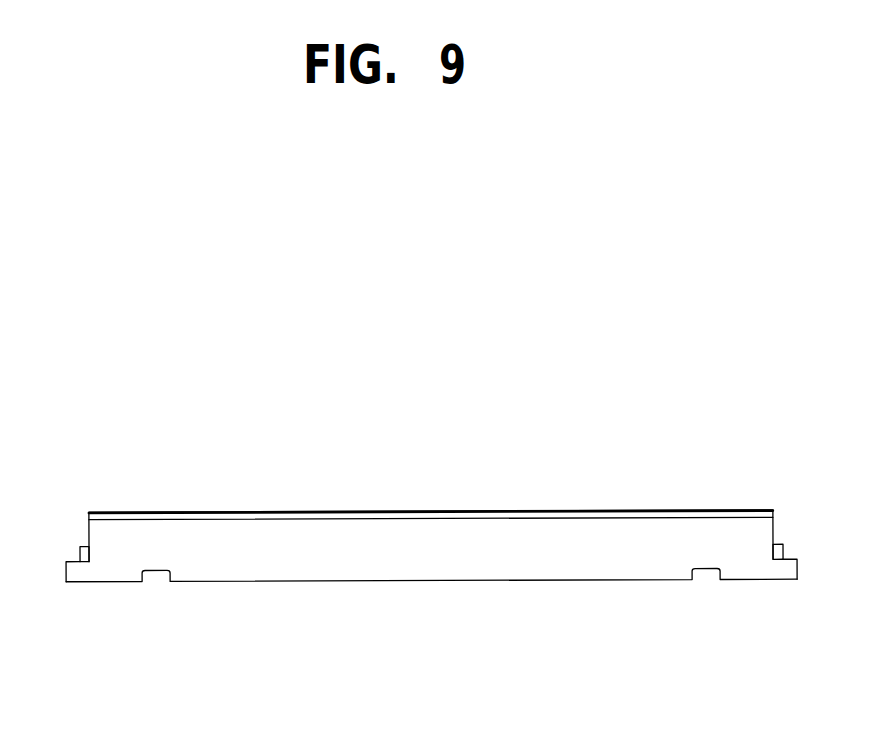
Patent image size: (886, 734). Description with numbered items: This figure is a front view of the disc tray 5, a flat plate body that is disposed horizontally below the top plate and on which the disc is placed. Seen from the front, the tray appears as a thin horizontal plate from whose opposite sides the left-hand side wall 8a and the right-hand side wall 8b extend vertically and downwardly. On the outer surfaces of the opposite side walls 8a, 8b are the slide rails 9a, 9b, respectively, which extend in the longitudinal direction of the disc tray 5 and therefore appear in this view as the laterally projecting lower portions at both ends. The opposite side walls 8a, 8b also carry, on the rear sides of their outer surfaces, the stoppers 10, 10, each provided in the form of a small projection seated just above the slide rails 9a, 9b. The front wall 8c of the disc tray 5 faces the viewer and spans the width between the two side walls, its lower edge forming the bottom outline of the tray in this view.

The disc tray 5 is at (392, 510).
The left-hand side wall 8a is at (88, 527).
The right-hand side wall 8b is at (776, 527).
The front wall 8c is at (430, 557).
The slide rail 9a is at (76, 581).
The slide rail 9b is at (782, 580).
The stopper 10 is at (80, 545).